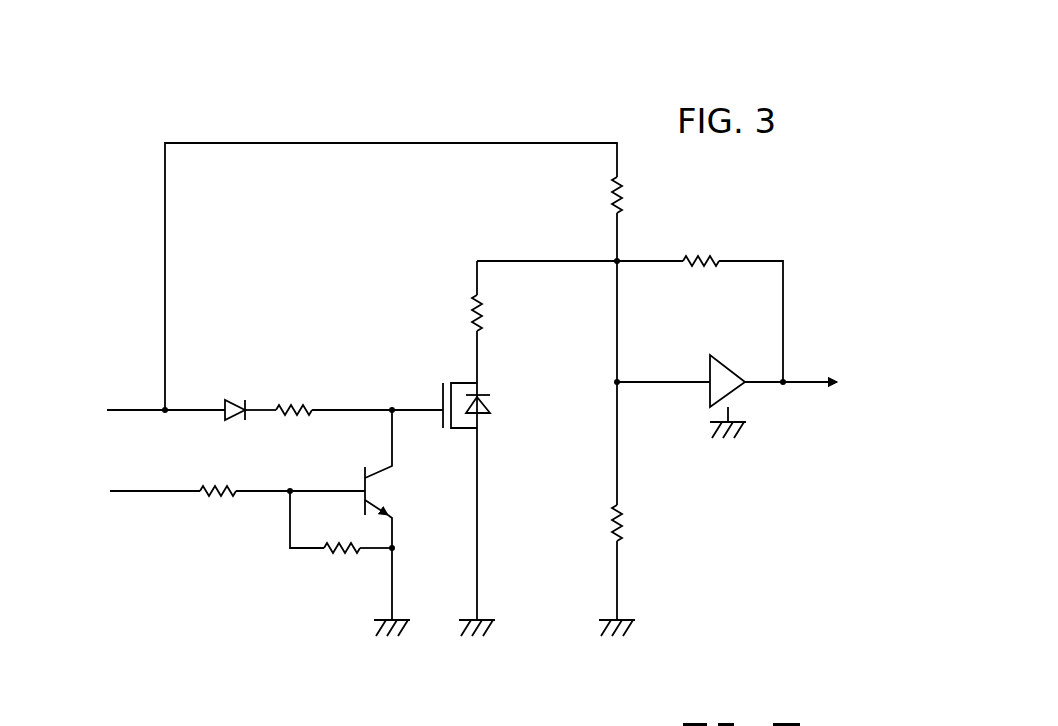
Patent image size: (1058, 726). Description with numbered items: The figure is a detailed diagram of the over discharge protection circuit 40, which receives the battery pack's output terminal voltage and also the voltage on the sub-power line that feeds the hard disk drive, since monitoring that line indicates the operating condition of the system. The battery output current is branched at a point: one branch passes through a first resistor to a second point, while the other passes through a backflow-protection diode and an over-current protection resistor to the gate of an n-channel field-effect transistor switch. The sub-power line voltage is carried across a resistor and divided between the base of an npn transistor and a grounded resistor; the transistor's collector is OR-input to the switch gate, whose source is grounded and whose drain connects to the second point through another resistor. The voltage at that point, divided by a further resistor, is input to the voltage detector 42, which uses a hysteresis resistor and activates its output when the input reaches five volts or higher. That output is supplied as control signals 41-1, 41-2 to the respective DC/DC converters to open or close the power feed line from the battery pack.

The over discharge protection circuit 40 is at (696, 490).
The voltage detector 42 is at (728, 367).
The control signal 41-1 is at (839, 367).
The control signal 41-2 is at (838, 395).